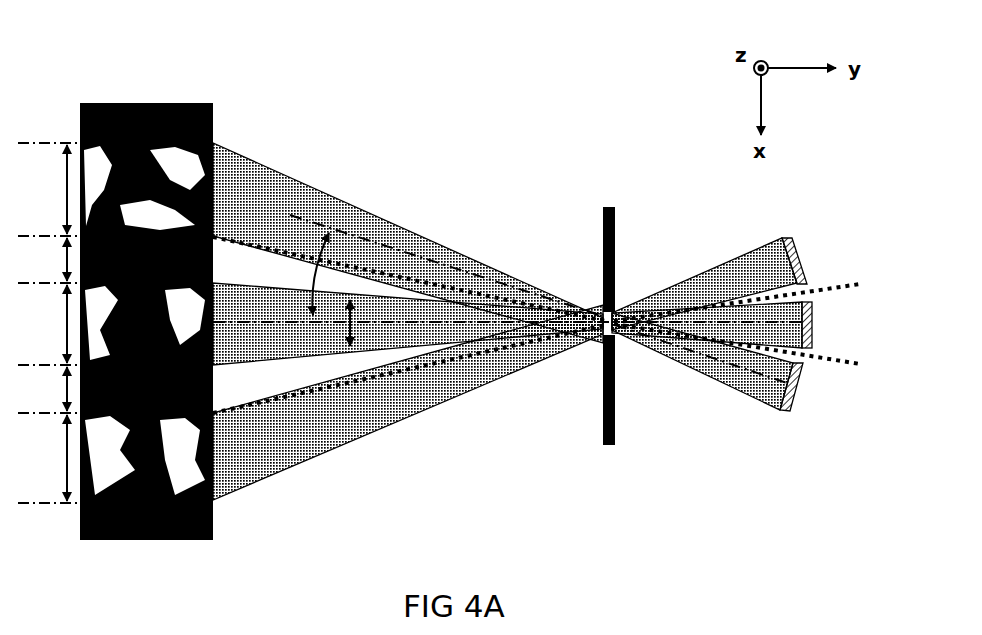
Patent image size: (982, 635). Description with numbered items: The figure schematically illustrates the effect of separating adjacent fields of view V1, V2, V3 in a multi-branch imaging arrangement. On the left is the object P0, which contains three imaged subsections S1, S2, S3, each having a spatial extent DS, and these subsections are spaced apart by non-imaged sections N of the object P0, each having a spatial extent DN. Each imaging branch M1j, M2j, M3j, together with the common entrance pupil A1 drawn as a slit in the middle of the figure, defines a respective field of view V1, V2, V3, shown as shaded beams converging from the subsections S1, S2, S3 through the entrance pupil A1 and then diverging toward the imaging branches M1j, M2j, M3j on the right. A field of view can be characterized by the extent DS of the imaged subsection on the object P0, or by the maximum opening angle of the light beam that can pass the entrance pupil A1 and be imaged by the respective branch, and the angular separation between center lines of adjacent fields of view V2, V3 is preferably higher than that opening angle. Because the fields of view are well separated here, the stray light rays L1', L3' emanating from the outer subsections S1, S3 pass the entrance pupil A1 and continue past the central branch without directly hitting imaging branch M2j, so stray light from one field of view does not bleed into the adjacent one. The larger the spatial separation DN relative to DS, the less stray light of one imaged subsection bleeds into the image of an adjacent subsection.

The object P0 is at (121, 83).
The imaged subsection S3 is at (146, 189).
The imaged subsection S2 is at (146, 324).
The imaged subsection S1 is at (146, 458).
The non-imaged section N is at (146, 324).
The spatial extent of imaged subsection DS is at (48, 323).
The spatial extent of non-imaged section DN is at (42, 324).
The field of view V3 is at (408, 243).
The field of view V2 is at (507, 324).
The field of view V1 is at (408, 402).
The entrance pupil A1 is at (596, 298).
The imaging branch M1j is at (728, 284).
The imaging branch M2j is at (734, 325).
The imaging branch M3j is at (729, 362).
The stray light ray L1' is at (561, 345).
The stray light ray L3' is at (561, 314).